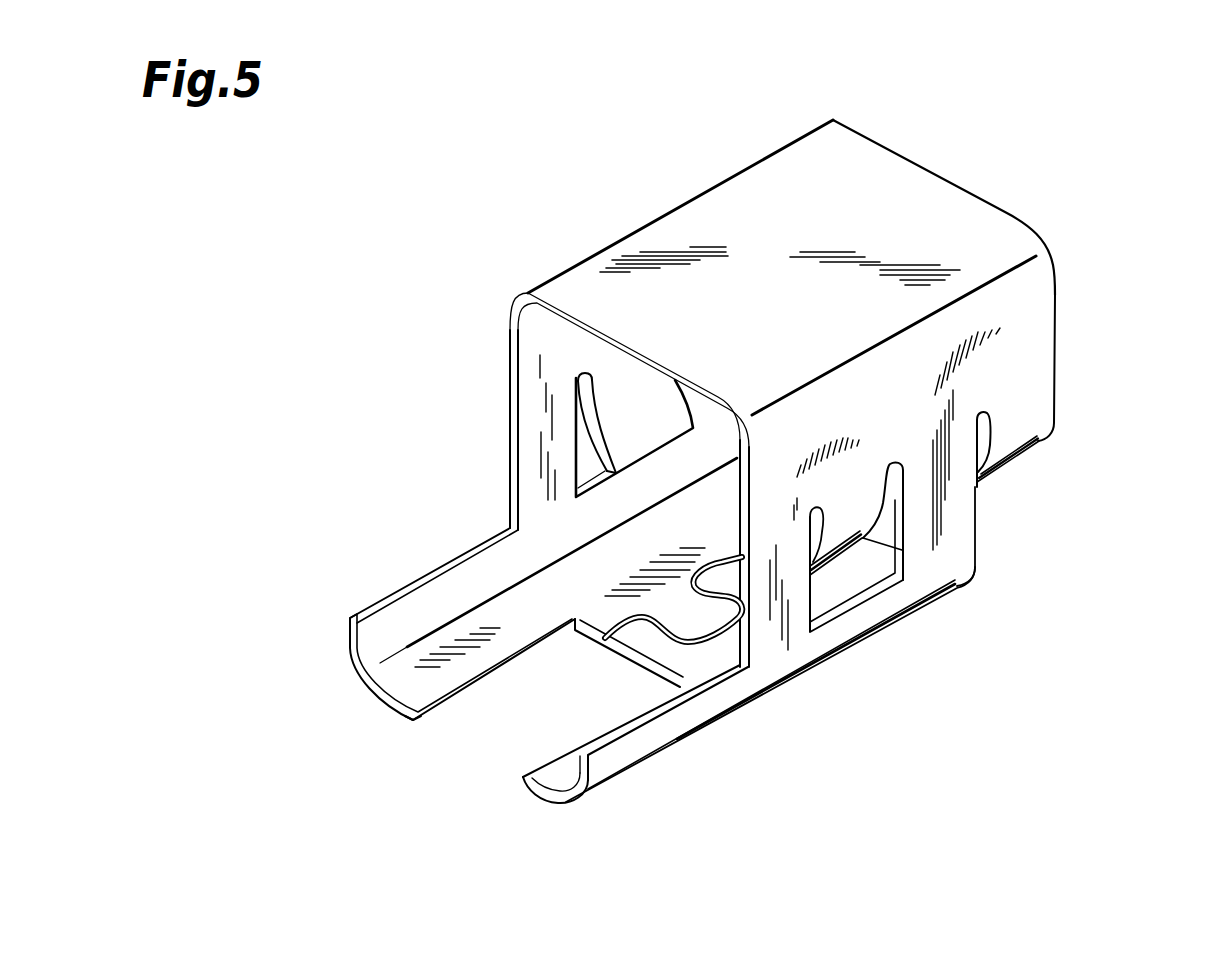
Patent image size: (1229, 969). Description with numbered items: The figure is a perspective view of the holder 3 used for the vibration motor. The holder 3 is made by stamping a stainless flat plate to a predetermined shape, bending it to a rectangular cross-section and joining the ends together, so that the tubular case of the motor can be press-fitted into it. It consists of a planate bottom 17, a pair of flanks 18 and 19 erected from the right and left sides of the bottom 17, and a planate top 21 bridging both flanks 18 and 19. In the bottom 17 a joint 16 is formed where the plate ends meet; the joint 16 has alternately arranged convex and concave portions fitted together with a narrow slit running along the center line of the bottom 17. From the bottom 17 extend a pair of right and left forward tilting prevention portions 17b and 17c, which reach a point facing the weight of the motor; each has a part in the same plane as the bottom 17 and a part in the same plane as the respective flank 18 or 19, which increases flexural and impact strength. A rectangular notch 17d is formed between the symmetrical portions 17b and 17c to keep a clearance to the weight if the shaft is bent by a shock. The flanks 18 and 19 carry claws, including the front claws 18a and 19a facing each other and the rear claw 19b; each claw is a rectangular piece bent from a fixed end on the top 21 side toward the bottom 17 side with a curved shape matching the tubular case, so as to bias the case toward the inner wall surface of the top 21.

The holder 3 is at (1002, 142).
The top 21 is at (732, 216).
The flank 18 is at (507, 353).
The front claw 18a is at (642, 420).
The flank 19 is at (1066, 352).
The front claw 19a is at (845, 533).
The rear claw 19b is at (1013, 433).
The bottom 17 is at (800, 678).
The forward tilting prevention portion 17b is at (410, 678).
The forward tilting prevention portion 17c is at (553, 775).
The notch 17d is at (438, 726).
The joint 16 is at (717, 647).